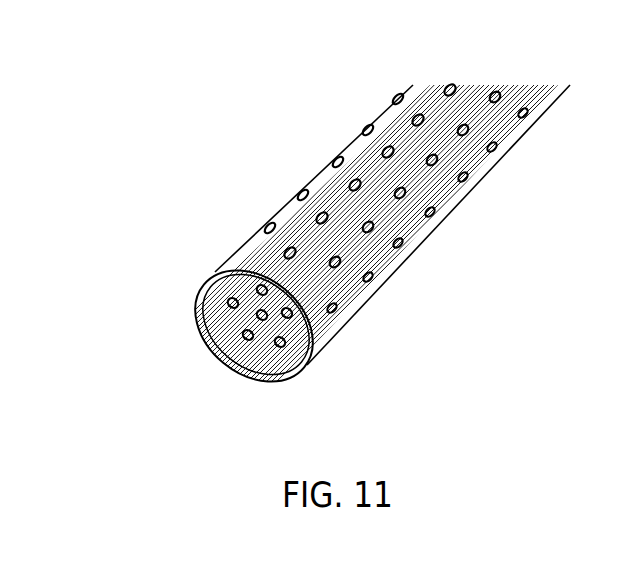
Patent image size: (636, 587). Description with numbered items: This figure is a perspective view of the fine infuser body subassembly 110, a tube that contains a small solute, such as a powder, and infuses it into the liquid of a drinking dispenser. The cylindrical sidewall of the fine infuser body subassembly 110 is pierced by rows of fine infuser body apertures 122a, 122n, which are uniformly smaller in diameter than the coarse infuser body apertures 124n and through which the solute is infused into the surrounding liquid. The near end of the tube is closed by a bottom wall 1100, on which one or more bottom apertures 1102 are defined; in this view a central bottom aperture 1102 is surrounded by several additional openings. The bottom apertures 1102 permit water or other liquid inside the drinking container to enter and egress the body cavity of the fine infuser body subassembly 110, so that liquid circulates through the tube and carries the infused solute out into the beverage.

The fine infuser body subassembly 110 is at (218, 196).
The fine infuser body aperture 122a is at (390, 99).
The fine infuser body aperture 122n is at (341, 311).
The coarse infuser body aperture 124n is at (310, 352).
The bottom wall 1100 is at (217, 325).
The bottom aperture 1102 is at (265, 327).